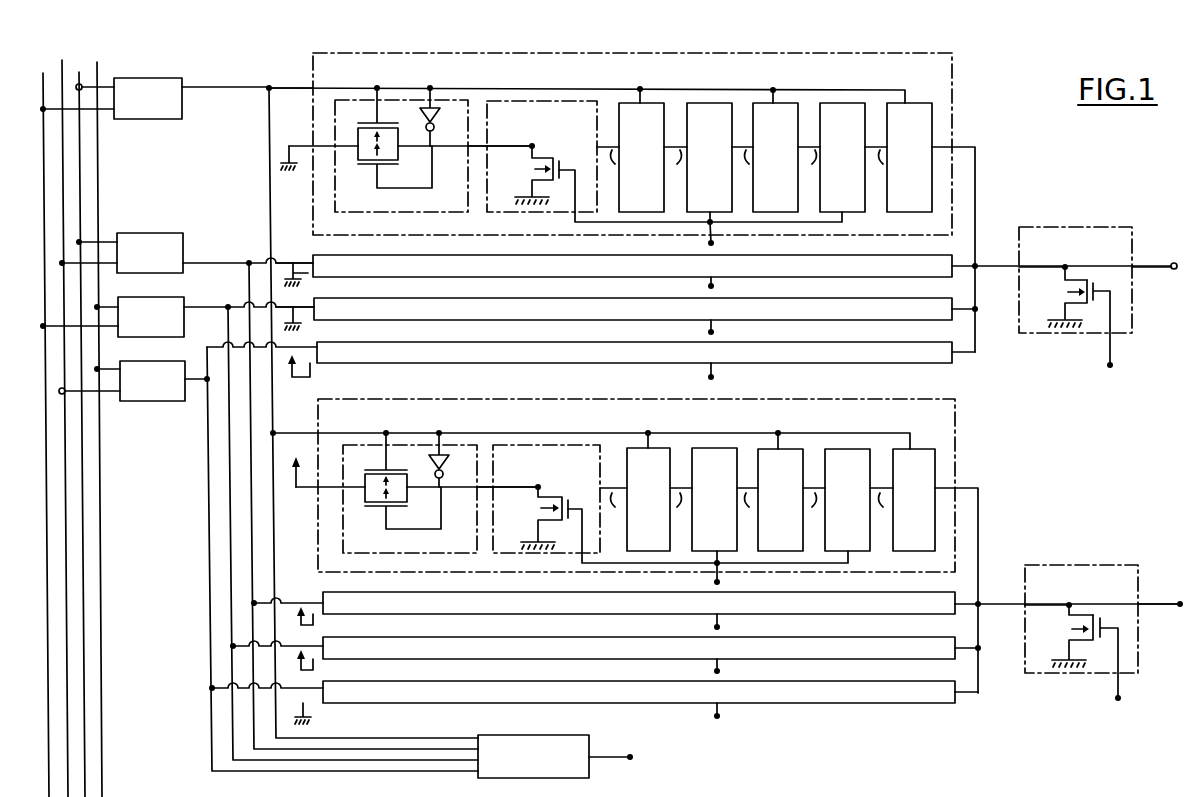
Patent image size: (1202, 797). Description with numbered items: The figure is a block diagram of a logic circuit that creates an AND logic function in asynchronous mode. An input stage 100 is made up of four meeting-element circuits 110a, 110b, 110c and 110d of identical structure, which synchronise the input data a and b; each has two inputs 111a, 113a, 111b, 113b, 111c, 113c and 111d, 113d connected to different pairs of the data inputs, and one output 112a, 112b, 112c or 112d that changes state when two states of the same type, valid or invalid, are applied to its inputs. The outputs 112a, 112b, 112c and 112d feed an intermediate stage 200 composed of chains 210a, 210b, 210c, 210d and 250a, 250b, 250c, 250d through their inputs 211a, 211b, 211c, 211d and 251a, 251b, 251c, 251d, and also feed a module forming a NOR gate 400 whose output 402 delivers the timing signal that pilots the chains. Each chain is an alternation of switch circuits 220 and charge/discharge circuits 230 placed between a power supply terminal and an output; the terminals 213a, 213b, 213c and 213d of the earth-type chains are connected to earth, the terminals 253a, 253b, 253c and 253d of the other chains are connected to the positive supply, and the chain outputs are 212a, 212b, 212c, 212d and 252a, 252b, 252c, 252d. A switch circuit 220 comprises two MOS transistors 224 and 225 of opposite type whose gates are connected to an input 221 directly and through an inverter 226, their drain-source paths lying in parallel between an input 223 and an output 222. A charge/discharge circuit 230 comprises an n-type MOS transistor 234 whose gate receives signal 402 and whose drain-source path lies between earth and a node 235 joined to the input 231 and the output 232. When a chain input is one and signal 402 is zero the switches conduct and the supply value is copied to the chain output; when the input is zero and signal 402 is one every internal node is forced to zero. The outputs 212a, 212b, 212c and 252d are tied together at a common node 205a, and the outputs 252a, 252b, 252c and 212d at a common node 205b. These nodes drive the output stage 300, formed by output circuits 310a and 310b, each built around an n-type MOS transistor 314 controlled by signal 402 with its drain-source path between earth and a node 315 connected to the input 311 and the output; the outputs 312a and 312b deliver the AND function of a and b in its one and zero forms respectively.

The input stage 100 is at (163, 67).
The meeting element circuit 110a is at (147, 119).
The meeting element circuit 110b is at (158, 233).
The meeting element circuit 110c is at (189, 298).
The meeting element circuit 110d is at (163, 403).
The input 111a is at (101, 85).
The input 111b is at (104, 228).
The input 111c is at (104, 307).
The input 111d is at (106, 369).
The output 112a is at (219, 91).
The output 112b is at (218, 262).
The output 112c is at (207, 310).
The output 112d is at (200, 402).
The input 113a is at (103, 113).
The input 113b is at (120, 262).
The input 113c is at (121, 326).
The input 113d is at (112, 404).
The intermediate stage 200 is at (298, 74).
The chain of switches 210a is at (955, 68).
The chain of switches 210b is at (632, 266).
The chain of switches 210c is at (633, 309).
The chain of switches 210d is at (639, 692).
The input 211a is at (303, 88).
The input 211b is at (300, 250).
The input 211c is at (305, 305).
The input 211d is at (301, 687).
The output 212a is at (963, 150).
The output 212b is at (958, 264).
The output 212c is at (960, 307).
The output 212d is at (960, 690).
The power supply terminal 213a is at (303, 150).
The power supply terminal 213b is at (318, 277).
The power supply terminal 213c is at (326, 318).
The power supply terminal 213d is at (317, 700).
The switch circuit 220 is at (378, 212).
The input 221 is at (404, 87).
The output 222 is at (448, 148).
The input 223 is at (320, 143).
The MOS transistor 224 is at (374, 279).
The MOS transistor 225 is at (391, 331).
The inverter 226 is at (449, 287).
The charge/discharge circuit 230 is at (533, 101).
The input 231 is at (500, 143).
The output 232 is at (578, 505).
The MOS transistor 234 is at (534, 347).
The node 235 is at (534, 144).
The chain of switches 250a is at (949, 398).
The chain of switches 250b is at (639, 604).
The chain of switches 250c is at (639, 649).
The chain of switches 250d is at (634, 352).
The input 251a is at (296, 430).
The input 251b is at (300, 600).
The input 251c is at (301, 644).
The input 251d is at (312, 347).
The output 252a is at (968, 489).
The output 252b is at (960, 602).
The output 252c is at (960, 646).
The output 252d is at (961, 350).
The power supply terminal 253a is at (298, 488).
The power supply terminal 253b is at (317, 618).
The power supply terminal 253c is at (320, 663).
The power supply terminal 253d is at (322, 370).
The common output node 205a is at (984, 262).
The common output node 205b is at (988, 600).
The output stage 300 is at (1107, 427).
The output circuit 310a is at (1125, 227).
The output circuit 310b is at (1126, 565).
The input 311 is at (1024, 265).
The output 312a is at (1161, 272).
The output 312b is at (1161, 610).
The MOS transistor 314 is at (1072, 489).
The node 315 is at (1068, 266).
The module forming NOR gate 400 is at (535, 735).
The output 402 is at (714, 244).